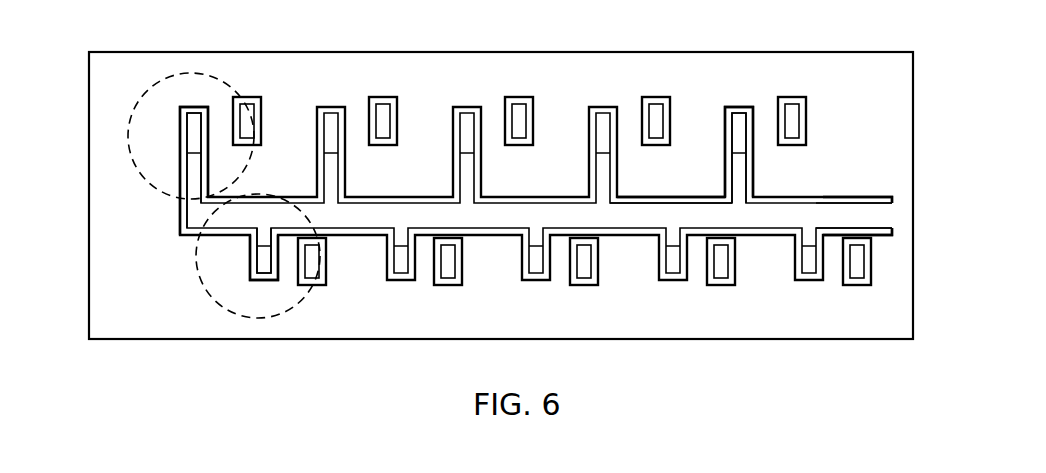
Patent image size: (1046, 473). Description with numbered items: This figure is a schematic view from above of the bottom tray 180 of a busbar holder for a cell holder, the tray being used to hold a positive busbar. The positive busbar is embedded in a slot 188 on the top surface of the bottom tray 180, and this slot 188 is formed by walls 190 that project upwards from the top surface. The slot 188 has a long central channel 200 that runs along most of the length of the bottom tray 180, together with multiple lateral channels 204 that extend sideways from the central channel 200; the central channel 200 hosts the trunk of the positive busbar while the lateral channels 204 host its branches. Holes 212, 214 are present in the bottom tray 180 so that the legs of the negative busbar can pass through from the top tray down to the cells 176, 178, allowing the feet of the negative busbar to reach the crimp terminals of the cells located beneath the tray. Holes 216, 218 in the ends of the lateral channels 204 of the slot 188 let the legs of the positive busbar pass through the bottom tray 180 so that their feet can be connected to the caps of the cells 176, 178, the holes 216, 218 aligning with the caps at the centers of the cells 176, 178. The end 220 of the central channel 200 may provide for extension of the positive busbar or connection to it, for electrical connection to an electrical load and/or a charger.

The cell 176 is at (202, 73).
The cell 178 is at (253, 317).
The bottom tray 180 is at (702, 51).
The slot 188 is at (360, 205).
The walls 190 is at (405, 196).
The central channel 200 is at (663, 205).
The lateral channels 204 is at (750, 188).
The hole 212 is at (250, 140).
The hole 214 is at (318, 258).
The hole 216 is at (187, 120).
The hole 218 is at (272, 280).
The end of the central channel 220 is at (885, 218).